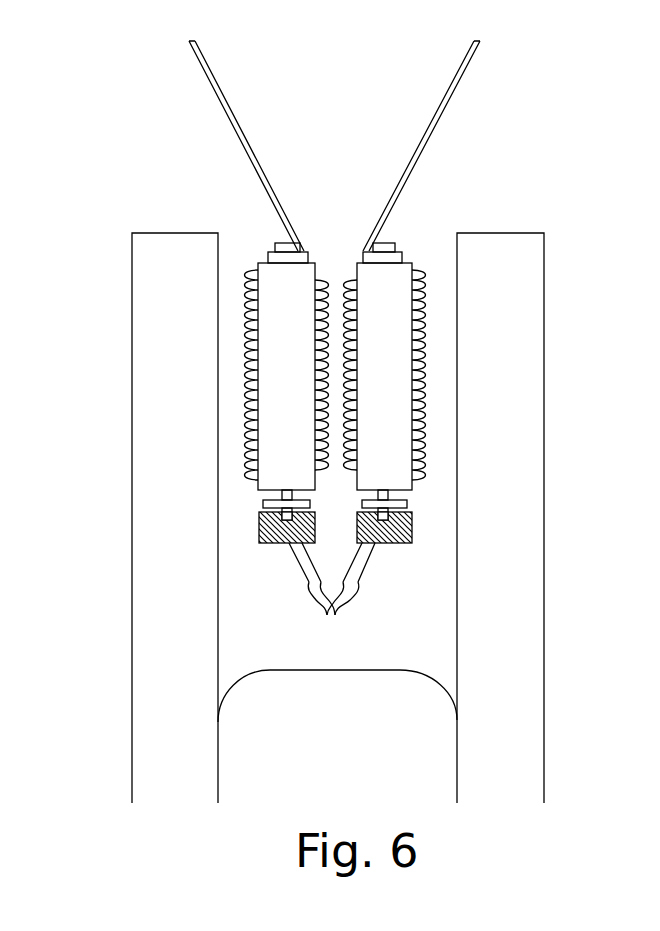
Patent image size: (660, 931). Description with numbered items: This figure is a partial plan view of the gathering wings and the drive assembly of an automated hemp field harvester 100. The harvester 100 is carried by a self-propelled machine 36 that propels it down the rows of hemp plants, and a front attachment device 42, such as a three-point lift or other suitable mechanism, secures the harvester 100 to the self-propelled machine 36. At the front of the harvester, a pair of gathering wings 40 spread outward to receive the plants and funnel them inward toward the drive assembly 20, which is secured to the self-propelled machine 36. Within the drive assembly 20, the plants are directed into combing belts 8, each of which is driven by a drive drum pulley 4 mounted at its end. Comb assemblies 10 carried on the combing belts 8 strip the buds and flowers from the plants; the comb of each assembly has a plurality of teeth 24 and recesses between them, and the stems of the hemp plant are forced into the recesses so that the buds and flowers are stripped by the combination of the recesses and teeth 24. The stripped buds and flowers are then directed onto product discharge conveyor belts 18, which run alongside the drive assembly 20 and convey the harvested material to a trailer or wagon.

The automated hemp field harvester 100 is at (139, 33).
The drive assembly 20 is at (88, 323).
The product discharge conveyor belt 18 is at (131, 370).
The self-propelled machine 36 is at (400, 670).
The gathering wing 40 is at (450, 78).
The drive drum pulley 4 is at (283, 243).
The combing belt 8 is at (413, 397).
The comb assembly 10 is at (253, 410).
The teeth 24 is at (325, 448).
The front attachment device 42 is at (335, 569).